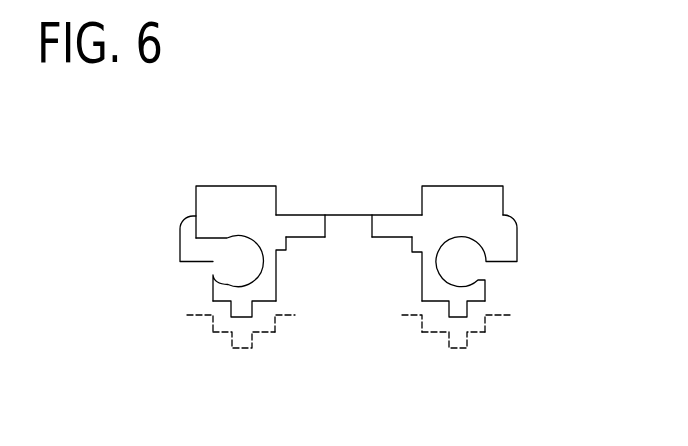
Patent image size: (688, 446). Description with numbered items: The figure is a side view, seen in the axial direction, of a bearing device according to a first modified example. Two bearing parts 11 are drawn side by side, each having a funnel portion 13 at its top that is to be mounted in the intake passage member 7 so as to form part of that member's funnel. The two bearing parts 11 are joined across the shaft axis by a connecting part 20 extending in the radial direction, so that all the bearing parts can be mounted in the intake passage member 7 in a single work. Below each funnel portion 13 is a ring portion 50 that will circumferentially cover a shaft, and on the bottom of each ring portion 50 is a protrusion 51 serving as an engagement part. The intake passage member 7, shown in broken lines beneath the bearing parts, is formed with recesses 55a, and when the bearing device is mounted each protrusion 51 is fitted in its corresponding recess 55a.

The bearing part 11 is at (168, 207).
The funnel portion 13 is at (235, 186).
The connecting part 20 is at (352, 215).
The ring portion 50 is at (277, 275).
The protrusion 51 is at (231, 309).
The intake passage member 7 is at (293, 315).
The recess 55a is at (230, 337).